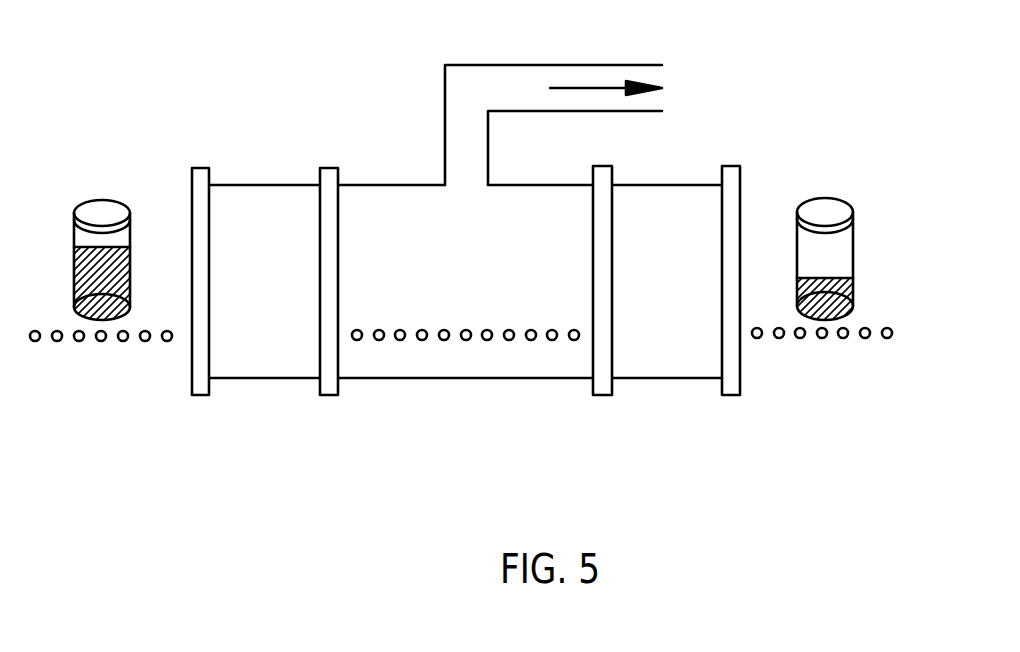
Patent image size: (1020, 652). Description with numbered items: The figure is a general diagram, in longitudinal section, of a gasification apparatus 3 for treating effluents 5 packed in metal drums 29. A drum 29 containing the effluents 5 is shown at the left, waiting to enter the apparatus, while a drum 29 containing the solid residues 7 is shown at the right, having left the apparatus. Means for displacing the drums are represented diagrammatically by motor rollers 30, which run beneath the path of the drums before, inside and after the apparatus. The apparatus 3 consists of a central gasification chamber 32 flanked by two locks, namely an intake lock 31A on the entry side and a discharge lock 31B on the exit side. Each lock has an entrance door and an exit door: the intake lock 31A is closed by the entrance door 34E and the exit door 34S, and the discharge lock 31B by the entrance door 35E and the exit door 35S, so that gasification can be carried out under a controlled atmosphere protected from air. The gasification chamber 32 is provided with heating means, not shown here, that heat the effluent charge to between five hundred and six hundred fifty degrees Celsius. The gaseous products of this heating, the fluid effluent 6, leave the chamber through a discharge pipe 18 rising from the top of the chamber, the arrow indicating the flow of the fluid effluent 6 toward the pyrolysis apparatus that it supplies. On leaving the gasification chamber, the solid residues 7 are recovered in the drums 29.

The gasification apparatus 3 is at (483, 322).
The effluents 5 is at (80, 215).
The fluid effluent 6 is at (627, 90).
The solid residues 7 is at (813, 277).
The discharge pipe 18 is at (493, 64).
The metal drums 29 is at (74, 265).
The motor rollers 30 is at (145, 342).
The intake lock 31A is at (305, 198).
The discharge lock 31B is at (670, 193).
The gasification chamber 32 is at (418, 213).
The entrance door of the intake lock 34E is at (201, 395).
The exit door of the intake lock 34S is at (332, 395).
The entrance door of the discharge lock 35E is at (601, 395).
The exit door of the discharge lock 35S is at (729, 395).